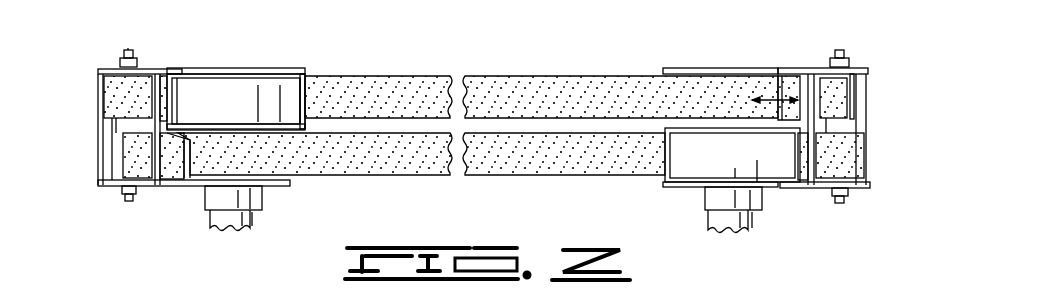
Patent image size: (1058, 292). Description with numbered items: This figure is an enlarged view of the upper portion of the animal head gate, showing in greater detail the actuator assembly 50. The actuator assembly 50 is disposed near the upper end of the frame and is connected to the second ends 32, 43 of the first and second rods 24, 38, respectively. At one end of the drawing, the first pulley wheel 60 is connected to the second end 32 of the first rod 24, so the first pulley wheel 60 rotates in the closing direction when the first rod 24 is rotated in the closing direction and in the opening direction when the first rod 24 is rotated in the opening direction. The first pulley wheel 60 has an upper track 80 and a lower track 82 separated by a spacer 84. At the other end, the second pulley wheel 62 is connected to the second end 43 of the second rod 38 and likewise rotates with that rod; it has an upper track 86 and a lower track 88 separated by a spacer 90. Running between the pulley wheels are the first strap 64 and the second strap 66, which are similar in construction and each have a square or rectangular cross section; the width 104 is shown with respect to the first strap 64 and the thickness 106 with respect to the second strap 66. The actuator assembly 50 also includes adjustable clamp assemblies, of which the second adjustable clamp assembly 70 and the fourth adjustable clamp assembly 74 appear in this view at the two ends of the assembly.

The first rod 24 is at (760, 230).
The second end of the first rod 32 is at (705, 198).
The second rod 38 is at (230, 228).
The second end of the second rod 43 is at (220, 200).
The actuator assembly 50 is at (302, 66).
The first pulley wheel 60 is at (690, 68).
The second pulley wheel 62 is at (235, 68).
The first strap 64 is at (410, 163).
The second strap 66 is at (405, 85).
The second adjustable clamp assembly 70 is at (870, 84).
The fourth adjustable clamp assembly 74 is at (100, 72).
The upper track 80 is at (662, 72).
The lower track 82 is at (680, 167).
The spacer 84 is at (690, 130).
The upper track 86 is at (250, 88).
The lower track 88 is at (300, 187).
The spacer 90 is at (218, 126).
The width 104 is at (177, 158).
The thickness 106 is at (752, 98).